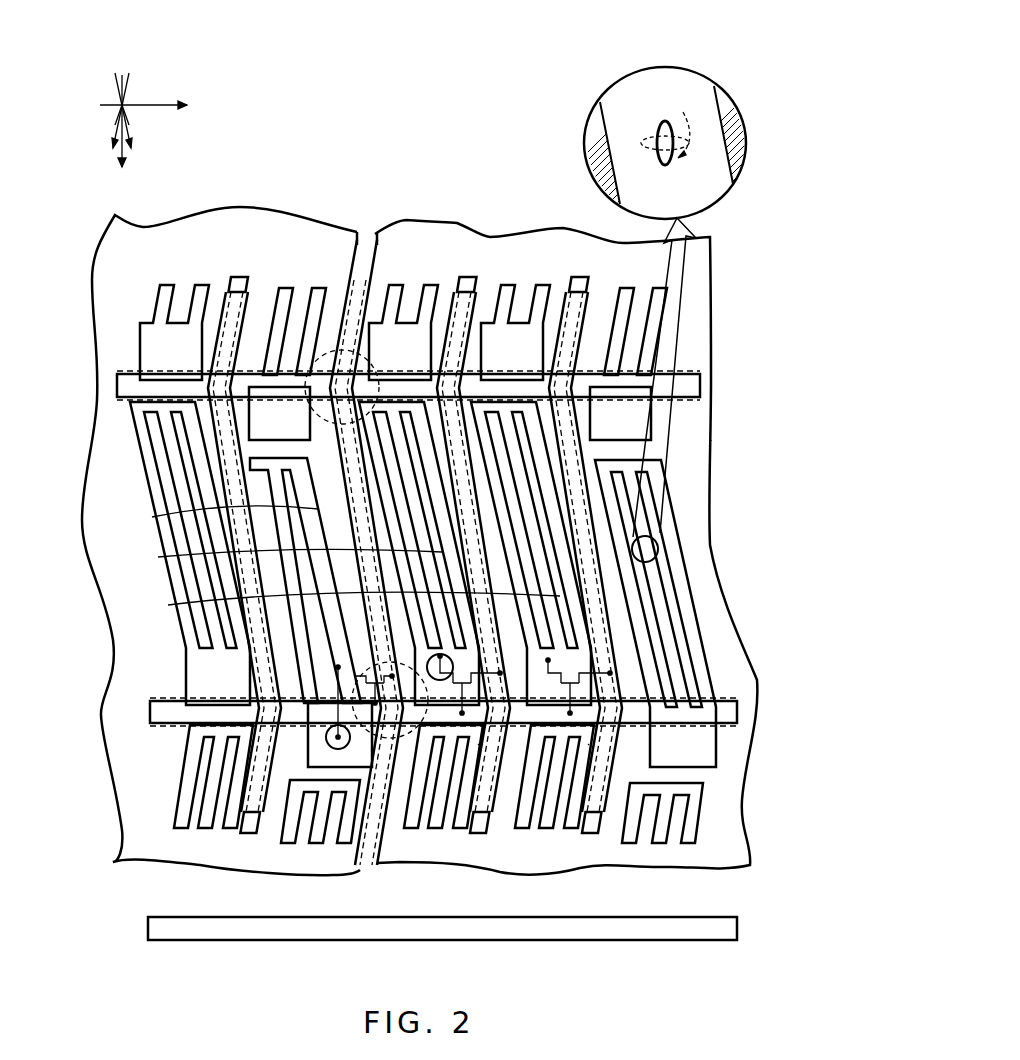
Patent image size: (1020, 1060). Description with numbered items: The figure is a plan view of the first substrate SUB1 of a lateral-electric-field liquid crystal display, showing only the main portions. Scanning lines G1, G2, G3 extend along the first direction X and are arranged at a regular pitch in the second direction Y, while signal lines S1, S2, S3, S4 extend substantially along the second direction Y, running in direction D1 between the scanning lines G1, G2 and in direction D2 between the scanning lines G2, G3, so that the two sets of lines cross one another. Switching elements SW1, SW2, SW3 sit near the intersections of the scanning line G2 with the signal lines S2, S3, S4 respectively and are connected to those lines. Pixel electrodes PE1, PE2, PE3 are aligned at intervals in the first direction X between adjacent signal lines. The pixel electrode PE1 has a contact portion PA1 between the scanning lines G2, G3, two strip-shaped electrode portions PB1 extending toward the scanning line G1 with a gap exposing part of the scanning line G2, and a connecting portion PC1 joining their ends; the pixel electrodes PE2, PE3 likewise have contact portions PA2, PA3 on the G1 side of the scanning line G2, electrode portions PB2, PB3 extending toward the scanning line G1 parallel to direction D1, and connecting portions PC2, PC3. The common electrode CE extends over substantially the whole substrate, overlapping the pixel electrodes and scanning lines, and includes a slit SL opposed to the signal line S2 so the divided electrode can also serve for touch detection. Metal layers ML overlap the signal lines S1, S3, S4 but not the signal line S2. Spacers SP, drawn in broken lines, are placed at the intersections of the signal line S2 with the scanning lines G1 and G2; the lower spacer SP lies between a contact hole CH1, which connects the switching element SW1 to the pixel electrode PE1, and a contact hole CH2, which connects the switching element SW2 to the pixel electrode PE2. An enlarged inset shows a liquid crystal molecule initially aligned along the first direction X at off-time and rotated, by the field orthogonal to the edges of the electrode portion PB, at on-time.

The electrode portion PB is at (716, 88).
The first substrate SUB1 is at (740, 268).
The common electrode CE is at (284, 210).
The slit SL is at (368, 230).
The signal line S1 is at (235, 277).
The signal line S2 is at (360, 278).
The signal line S3 is at (468, 280).
The signal line S4 is at (580, 280).
The metal layer ML is at (246, 292).
The connecting portion PC1 is at (281, 465).
The connecting portion PC2 is at (398, 410).
The connecting portion PC3 is at (510, 410).
The scanning line G1 is at (117, 386).
The scanning line G2 is at (150, 714).
The scanning line G3 is at (148, 928).
The spacer SP is at (320, 424).
The electrode portion PB1 is at (288, 520).
The electrode portion PB2 is at (407, 566).
The electrode portion PB3 is at (520, 617).
The contact hole CH1 is at (335, 750).
The contact hole CH2 is at (453, 664).
The contact portion PA1 is at (330, 768).
The contact portion PA2 is at (478, 745).
The contact portion PA3 is at (588, 745).
The pixel electrode PE1 is at (298, 760).
The pixel electrode PE2 is at (414, 720).
The pixel electrode PE3 is at (526, 720).
The switching element SW1 is at (364, 707).
The switching element SW2 is at (448, 705).
The switching element SW3 is at (563, 705).
The first direction X is at (151, 105).
The second direction Y is at (120, 132).
The direction D1 is at (135, 116).
The direction D2 is at (108, 116).